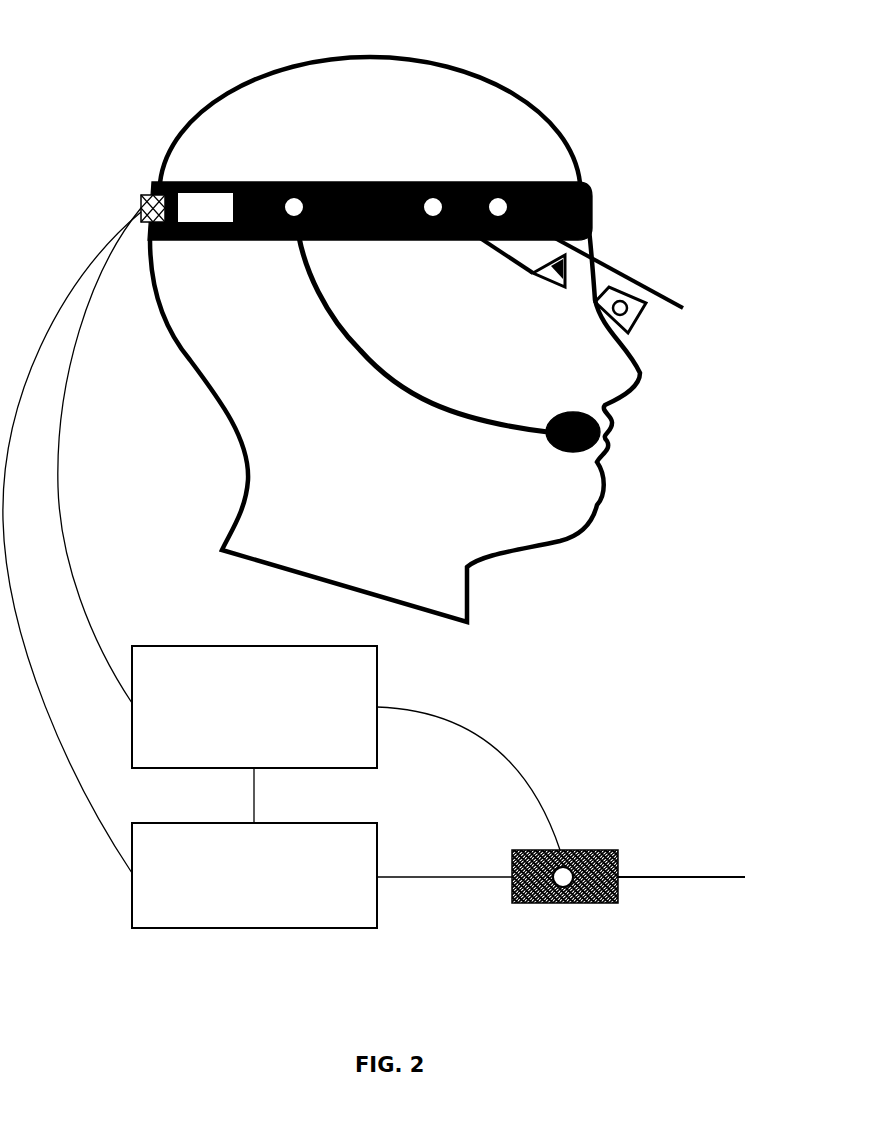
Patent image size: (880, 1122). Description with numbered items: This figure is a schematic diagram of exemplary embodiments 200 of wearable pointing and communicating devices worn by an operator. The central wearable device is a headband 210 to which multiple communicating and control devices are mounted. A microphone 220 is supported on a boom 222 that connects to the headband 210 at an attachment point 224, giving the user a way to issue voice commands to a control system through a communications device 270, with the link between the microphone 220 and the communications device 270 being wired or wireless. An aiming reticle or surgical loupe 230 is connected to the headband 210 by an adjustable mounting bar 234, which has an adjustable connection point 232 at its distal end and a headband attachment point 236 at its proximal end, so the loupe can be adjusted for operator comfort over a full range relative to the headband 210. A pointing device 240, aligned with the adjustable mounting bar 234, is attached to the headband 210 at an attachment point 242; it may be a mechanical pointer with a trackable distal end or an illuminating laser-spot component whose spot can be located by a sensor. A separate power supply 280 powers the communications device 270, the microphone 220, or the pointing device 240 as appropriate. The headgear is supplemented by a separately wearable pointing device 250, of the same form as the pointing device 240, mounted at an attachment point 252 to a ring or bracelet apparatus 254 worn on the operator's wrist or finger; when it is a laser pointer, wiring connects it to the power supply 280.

The exemplary embodiments of wearable pointing and communicating devices 200 is at (80, 48).
The headband 210 is at (366, 211).
The microphone 220 is at (573, 432).
The boom 222 is at (353, 347).
The attachment point 224 is at (288, 200).
The aiming reticle or surgical loupe 230 is at (600, 325).
The adjustable connection point 232 is at (597, 305).
The adjustable mounting bar 234 is at (502, 248).
The headband attachment point 236 is at (404, 183).
The pointing device 240 is at (633, 277).
The attachment point 242 is at (473, 183).
The separately wearable pointing device 250 is at (710, 877).
The attachment point 252 is at (618, 903).
The ring or bracelet apparatus 254 is at (618, 850).
The communications device 270 is at (217, 488).
The power supply 280 is at (190, 570).